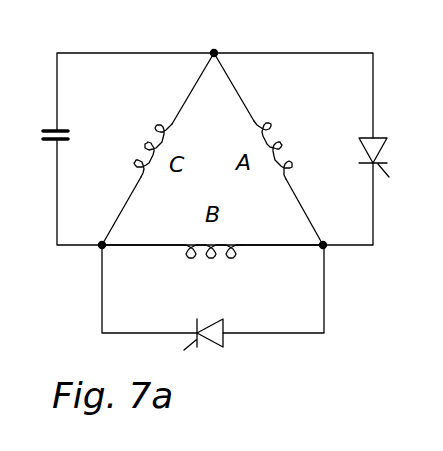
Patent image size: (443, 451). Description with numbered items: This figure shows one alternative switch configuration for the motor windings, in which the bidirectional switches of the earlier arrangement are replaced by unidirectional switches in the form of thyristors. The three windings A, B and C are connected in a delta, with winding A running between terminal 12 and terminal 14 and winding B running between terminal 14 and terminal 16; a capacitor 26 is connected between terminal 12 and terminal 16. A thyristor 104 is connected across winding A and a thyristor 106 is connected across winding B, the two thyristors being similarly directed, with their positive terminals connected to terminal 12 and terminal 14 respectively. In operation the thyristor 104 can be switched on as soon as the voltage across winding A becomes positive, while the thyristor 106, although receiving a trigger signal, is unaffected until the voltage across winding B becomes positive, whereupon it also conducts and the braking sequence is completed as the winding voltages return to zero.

The terminal 12 is at (215, 52).
The terminal 14 is at (324, 244).
The junction node of windings B and C 16 is at (102, 244).
The capacitor 26 is at (58, 130).
The thyristor 104 is at (353, 149).
The thyristor 106 is at (223, 326).